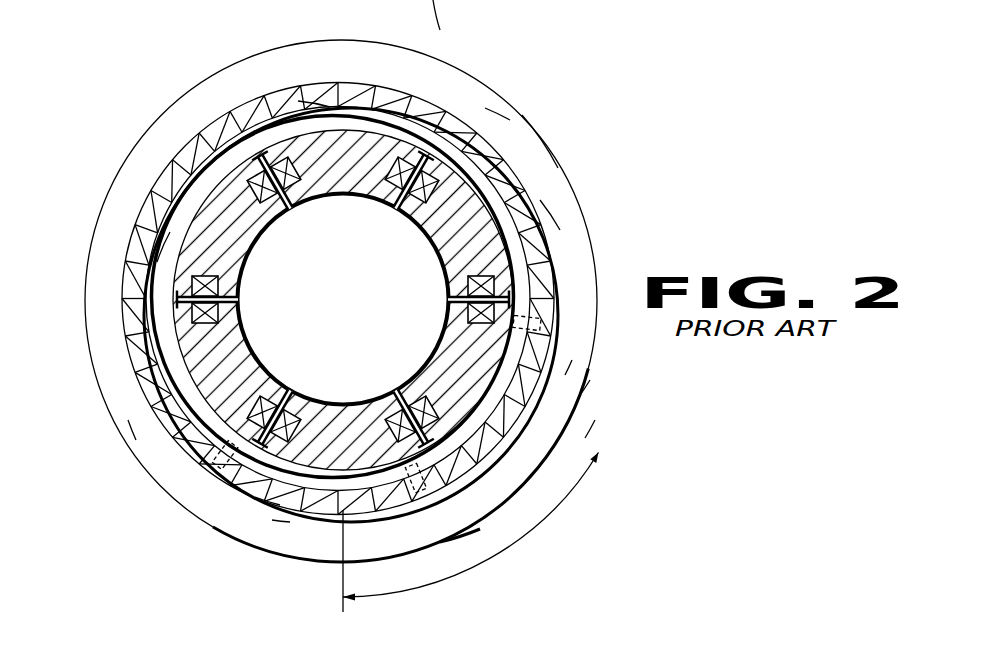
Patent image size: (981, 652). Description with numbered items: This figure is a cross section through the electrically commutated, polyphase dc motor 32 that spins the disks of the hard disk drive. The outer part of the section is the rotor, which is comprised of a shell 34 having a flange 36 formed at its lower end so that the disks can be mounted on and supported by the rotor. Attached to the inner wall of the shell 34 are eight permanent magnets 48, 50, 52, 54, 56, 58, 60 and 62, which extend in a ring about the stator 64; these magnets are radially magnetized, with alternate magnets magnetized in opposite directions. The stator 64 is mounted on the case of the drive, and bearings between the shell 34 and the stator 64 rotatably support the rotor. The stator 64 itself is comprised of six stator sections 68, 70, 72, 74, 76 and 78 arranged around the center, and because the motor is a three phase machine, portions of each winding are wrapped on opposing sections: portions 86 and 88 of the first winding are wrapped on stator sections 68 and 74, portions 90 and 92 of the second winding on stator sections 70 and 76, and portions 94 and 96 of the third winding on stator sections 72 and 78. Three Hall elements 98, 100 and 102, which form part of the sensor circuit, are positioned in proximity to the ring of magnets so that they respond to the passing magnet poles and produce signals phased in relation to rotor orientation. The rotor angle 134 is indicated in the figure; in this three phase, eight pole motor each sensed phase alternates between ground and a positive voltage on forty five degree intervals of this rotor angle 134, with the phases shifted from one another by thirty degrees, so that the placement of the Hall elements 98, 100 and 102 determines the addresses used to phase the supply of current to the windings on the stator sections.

The motor 32 is at (636, 210).
The shell 34 is at (513, 180).
The flange 36 is at (483, 93).
The permanent magnet 48 is at (540, 200).
The permanent magnet 50 is at (578, 398).
The permanent magnet 52 is at (517, 487).
The permanent magnet 54 is at (272, 520).
The permanent magnet 56 is at (150, 441).
The permanent magnet 58 is at (157, 262).
The permanent magnet 60 is at (298, 100).
The permanent magnet 62 is at (485, 108).
The stator 64 is at (352, 93).
The stator section 68 is at (367, 143).
The stator section 70 is at (518, 133).
The stator section 72 is at (585, 438).
The stator section 74 is at (255, 497).
The stator section 76 is at (185, 374).
The stator section 78 is at (225, 212).
The winding portion 86 is at (280, 160).
The winding portion 88 is at (487, 519).
The winding portion 90 is at (492, 280).
The winding portion 92 is at (158, 343).
The winding portion 94 is at (565, 375).
The winding portion 96 is at (178, 225).
The Hall element 98 is at (535, 336).
The Hall element 100 is at (428, 503).
The Hall element 102 is at (218, 466).
The rotor angle 134 is at (443, 581).